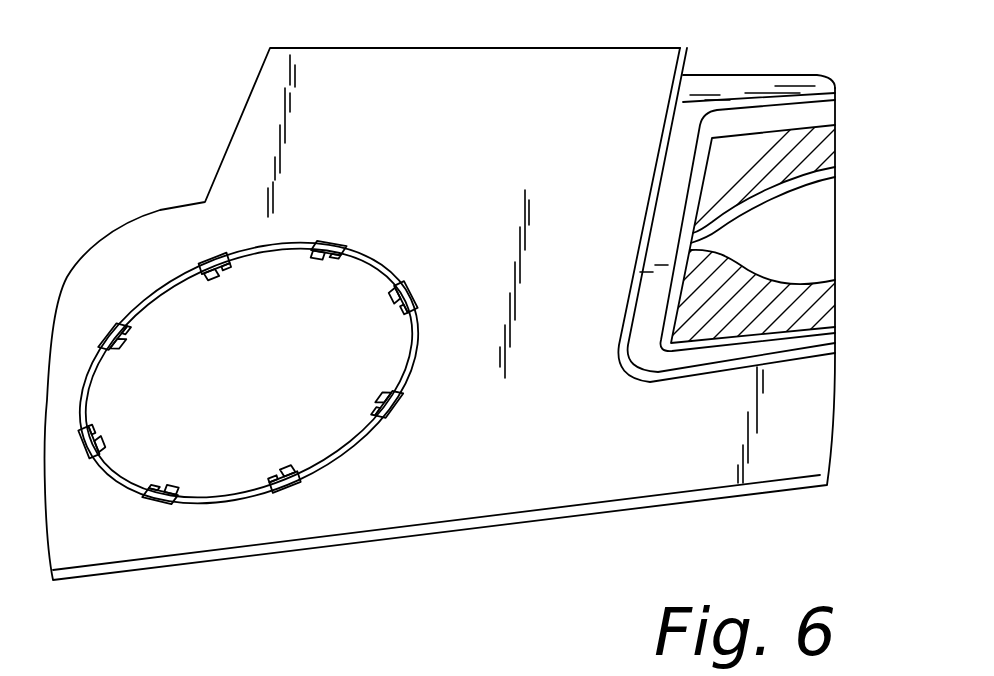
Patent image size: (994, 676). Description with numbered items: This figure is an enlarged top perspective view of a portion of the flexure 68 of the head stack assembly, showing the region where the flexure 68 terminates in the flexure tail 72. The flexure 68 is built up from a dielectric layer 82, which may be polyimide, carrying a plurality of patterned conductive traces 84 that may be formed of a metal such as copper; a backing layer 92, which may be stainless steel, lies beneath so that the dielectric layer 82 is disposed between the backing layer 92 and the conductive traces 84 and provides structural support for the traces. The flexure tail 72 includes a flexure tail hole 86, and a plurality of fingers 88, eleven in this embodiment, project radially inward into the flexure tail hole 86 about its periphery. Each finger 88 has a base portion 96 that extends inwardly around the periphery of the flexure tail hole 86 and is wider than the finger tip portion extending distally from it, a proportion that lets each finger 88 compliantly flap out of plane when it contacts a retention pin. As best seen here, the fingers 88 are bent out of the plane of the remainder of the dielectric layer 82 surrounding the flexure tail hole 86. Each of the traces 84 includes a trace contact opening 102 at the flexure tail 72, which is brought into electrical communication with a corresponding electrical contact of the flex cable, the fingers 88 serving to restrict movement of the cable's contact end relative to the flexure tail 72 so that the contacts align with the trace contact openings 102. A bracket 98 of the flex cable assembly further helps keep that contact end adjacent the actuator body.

The flexure 68 is at (182, 93).
The flexure tail 72 is at (229, 73).
The dielectric layer 82 is at (711, 80).
The conductive traces 84 is at (832, 148).
The flexure tail hole 86 is at (168, 318).
The fingers 88 is at (210, 252).
The backing layer 92 is at (546, 123).
The base portion 96 is at (220, 277).
The bracket 98 is at (222, 273).
The trace contact opening 102 is at (822, 213).